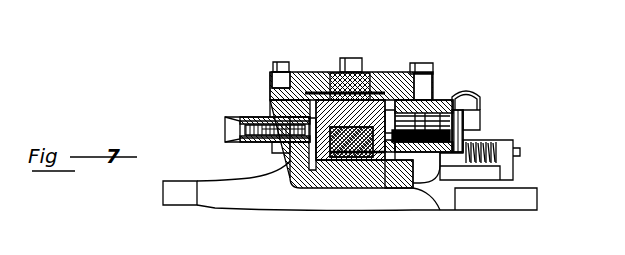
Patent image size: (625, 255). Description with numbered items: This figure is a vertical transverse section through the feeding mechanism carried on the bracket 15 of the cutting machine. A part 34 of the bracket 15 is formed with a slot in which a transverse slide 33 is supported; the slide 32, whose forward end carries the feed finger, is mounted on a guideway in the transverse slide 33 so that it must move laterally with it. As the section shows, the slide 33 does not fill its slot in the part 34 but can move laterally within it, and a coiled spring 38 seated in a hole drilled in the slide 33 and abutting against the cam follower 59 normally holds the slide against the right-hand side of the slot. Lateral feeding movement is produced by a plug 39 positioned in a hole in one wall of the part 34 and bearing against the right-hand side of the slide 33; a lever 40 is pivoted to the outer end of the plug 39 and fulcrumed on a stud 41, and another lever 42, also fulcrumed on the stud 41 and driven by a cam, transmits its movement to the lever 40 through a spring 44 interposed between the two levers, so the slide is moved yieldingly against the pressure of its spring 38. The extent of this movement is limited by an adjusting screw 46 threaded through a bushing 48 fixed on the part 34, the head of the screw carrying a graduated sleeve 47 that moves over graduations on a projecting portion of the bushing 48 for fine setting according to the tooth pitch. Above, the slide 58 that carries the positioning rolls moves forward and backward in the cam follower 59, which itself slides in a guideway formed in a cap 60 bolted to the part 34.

The bracket 15 is at (213, 200).
The slide 32 is at (363, 188).
The transverse slide 33 is at (406, 190).
The part of the bracket 34 is at (415, 185).
The coiled spring 38 is at (318, 192).
The plug 39 is at (432, 87).
The lever 40 is at (478, 130).
The stud 41 is at (467, 95).
The lever 42 is at (505, 173).
The spring 44 is at (493, 145).
The adjusting screw 46 is at (270, 115).
The graduated sleeve 47 is at (245, 123).
The bushing 48 is at (255, 143).
The slide 58 is at (370, 75).
The cam follower 59 is at (315, 82).
The cap 60 is at (272, 84).